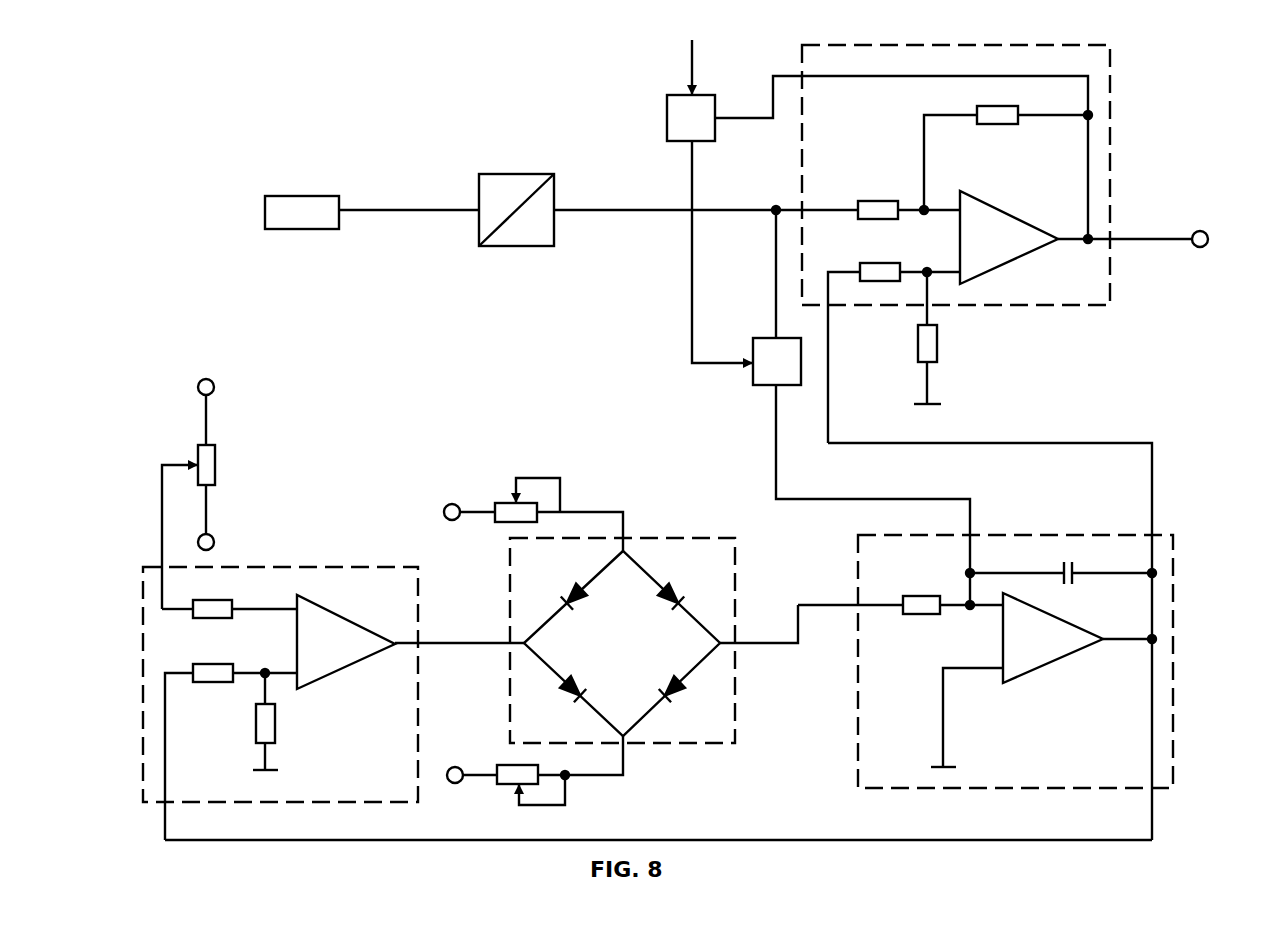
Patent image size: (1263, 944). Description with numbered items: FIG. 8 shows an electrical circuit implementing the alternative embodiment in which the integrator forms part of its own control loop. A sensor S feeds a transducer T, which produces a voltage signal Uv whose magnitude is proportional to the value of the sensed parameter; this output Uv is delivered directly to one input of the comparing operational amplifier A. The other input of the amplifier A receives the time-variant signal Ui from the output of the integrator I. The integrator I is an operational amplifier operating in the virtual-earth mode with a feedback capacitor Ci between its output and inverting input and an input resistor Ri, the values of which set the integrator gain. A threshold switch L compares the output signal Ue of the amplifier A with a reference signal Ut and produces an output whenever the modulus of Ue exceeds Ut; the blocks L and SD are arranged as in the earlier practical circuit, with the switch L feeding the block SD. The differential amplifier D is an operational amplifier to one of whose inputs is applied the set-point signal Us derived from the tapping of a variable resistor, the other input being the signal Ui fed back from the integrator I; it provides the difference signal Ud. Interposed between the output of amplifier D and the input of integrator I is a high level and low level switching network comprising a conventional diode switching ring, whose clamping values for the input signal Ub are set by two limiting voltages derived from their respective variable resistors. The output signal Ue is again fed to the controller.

The sensor S is at (302, 212).
The transducer T is at (516, 196).
The threshold switch L is at (691, 90).
The circuit block SD is at (777, 297).
The error amplifier A is at (997, 244).
The integrator I is at (985, 661).
The resistor Ri is at (921, 590).
The capacitor Ci is at (1061, 562).
The differential amplifier D is at (280, 703).
The transducer output signal Uv is at (706, 196).
The reference signal Ut is at (711, 67).
The error amplifier output signal Ue is at (1216, 242).
The integrator output signal Ui is at (1004, 641).
The integrator input signal Ub is at (775, 610).
The difference signal Ud is at (459, 629).
The set-point signal Us is at (186, 494).